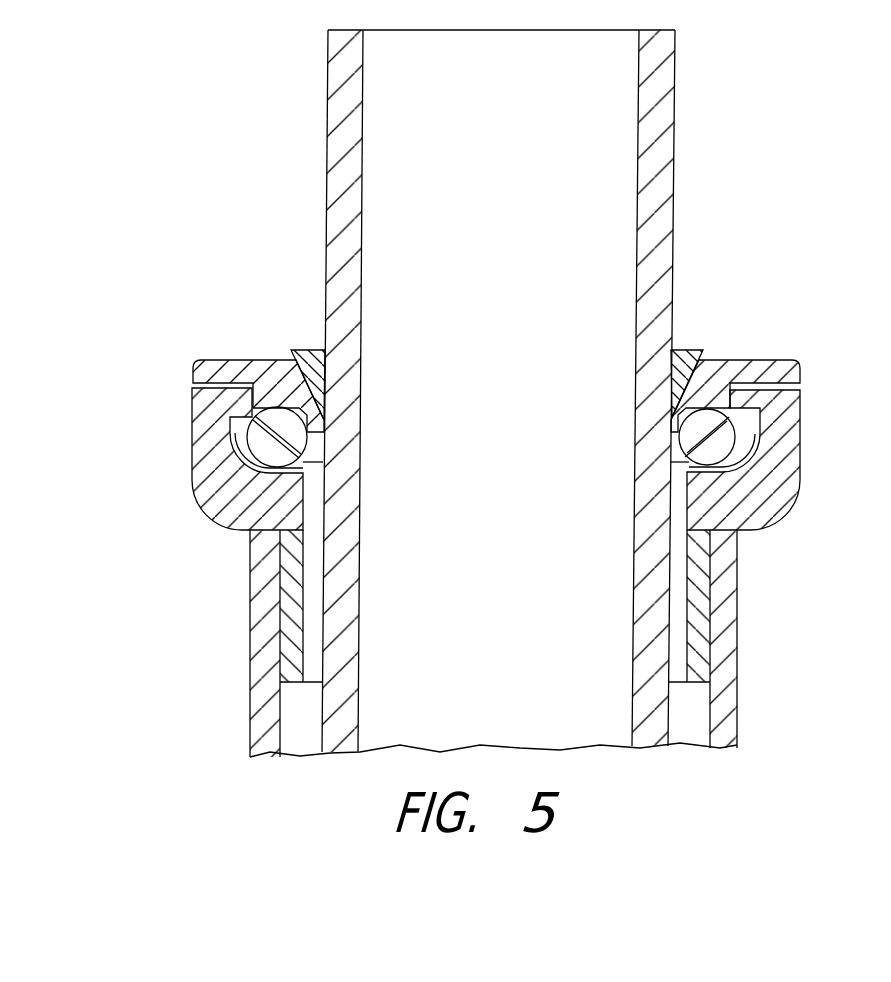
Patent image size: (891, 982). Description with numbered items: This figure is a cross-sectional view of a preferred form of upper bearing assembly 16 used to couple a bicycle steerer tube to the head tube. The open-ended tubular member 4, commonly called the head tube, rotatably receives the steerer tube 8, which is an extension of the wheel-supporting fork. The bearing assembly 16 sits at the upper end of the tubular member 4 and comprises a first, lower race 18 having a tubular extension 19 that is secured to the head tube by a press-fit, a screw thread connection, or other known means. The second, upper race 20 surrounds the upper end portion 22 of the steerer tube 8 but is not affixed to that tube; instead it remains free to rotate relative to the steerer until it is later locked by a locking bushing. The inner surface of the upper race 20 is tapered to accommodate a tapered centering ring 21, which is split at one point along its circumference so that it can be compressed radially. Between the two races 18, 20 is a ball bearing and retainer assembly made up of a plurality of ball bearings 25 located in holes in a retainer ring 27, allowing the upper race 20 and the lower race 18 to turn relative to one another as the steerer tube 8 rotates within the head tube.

The tubular member 4 is at (477, 643).
The steerer tube 8 is at (442, 391).
The upper bearing assembly 16 is at (475, 414).
The first race 18 is at (802, 470).
The tubular extension 19 is at (702, 576).
The second race 20 is at (232, 360).
The tapered centering ring 21 is at (307, 348).
The upper end portion 22 is at (333, 107).
The ball bearings 25 is at (735, 438).
The retainer ring 27 is at (728, 433).